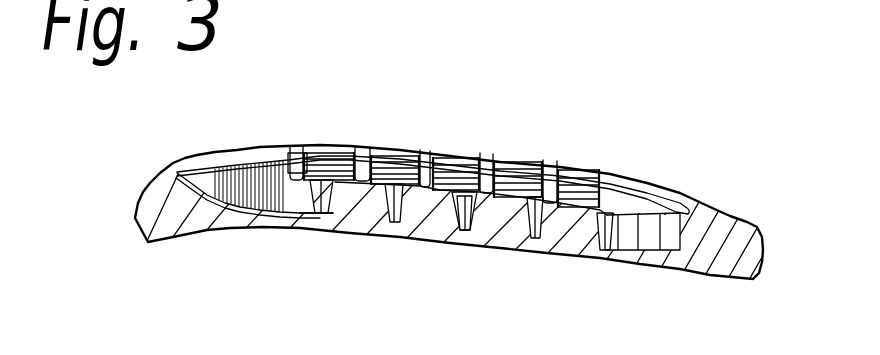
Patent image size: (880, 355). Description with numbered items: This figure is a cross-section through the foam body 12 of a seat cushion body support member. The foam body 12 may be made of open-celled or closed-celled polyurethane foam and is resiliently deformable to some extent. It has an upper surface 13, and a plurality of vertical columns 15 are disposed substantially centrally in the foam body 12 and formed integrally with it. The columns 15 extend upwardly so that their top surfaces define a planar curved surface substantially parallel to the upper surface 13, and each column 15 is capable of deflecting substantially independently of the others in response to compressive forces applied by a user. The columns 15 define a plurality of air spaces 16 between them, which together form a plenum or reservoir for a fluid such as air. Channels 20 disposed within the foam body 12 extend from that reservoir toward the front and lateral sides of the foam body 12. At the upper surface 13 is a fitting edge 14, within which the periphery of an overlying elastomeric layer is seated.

The foam body 12 is at (128, 197).
The upper surface 13 is at (683, 203).
The fitting edge 14 is at (627, 200).
The vertical columns 15 is at (515, 187).
The air spaces 16 is at (550, 193).
The channels 20 is at (263, 158).